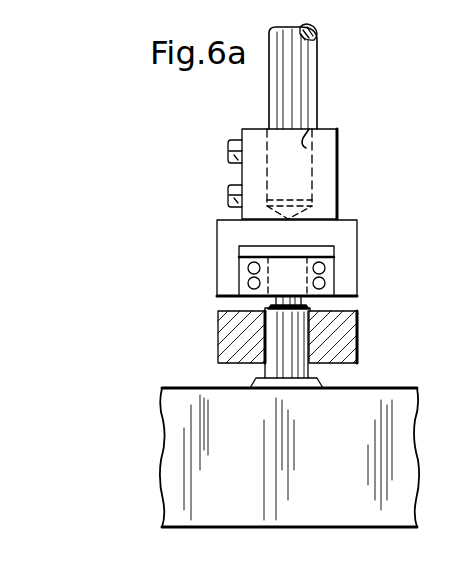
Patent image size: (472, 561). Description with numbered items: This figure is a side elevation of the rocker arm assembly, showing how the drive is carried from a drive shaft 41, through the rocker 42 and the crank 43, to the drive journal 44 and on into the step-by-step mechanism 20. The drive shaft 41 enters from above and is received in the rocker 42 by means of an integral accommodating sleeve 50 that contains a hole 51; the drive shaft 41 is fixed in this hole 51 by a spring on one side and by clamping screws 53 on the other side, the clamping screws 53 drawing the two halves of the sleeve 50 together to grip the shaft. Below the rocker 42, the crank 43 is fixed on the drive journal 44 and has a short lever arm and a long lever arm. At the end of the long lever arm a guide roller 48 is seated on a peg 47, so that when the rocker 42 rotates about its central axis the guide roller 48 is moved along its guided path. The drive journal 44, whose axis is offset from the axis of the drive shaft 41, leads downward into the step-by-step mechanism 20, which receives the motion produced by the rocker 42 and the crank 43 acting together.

The step-by-step mechanism 20 is at (336, 468).
The drive shaft 41 is at (302, 71).
The rocker 42 is at (343, 230).
The crank 43 is at (340, 352).
The drive journal 44 is at (282, 339).
The peg 47 is at (293, 284).
The guide roller 48 is at (326, 277).
The accommodating sleeve 50 is at (328, 164).
The hole 51 is at (310, 128).
The clamping screws 53 is at (228, 186).